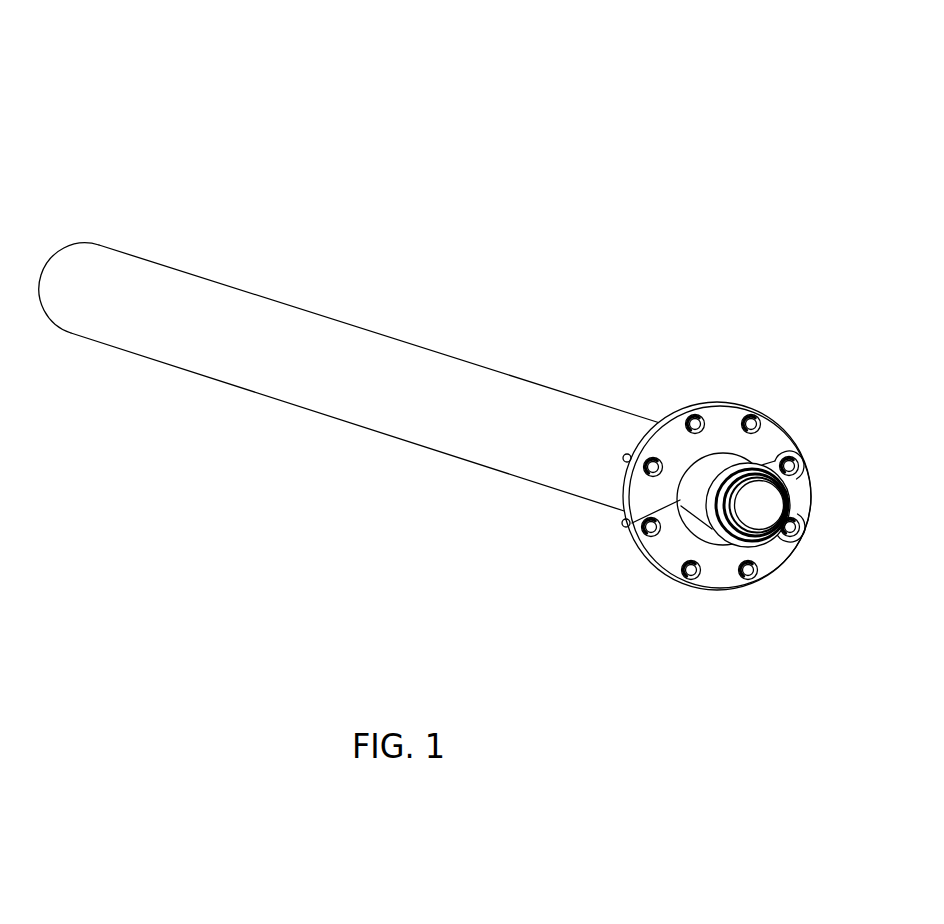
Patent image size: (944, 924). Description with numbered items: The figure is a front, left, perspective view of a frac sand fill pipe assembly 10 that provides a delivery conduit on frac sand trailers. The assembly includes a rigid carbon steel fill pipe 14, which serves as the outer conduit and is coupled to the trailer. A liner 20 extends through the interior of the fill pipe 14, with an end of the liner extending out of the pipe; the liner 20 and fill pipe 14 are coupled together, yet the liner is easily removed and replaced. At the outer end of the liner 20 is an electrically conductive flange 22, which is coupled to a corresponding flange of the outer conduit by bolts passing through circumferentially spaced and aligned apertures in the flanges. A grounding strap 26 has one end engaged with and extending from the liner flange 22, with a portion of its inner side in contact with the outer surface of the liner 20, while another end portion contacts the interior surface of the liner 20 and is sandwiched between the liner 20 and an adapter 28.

The fill pipe assembly 10 is at (372, 156).
The fill pipe 14 is at (185, 355).
The liner 20 is at (702, 477).
The electrically conductive flange 22 is at (722, 422).
The grounding strap 26 is at (672, 524).
The adapter 28 is at (786, 500).